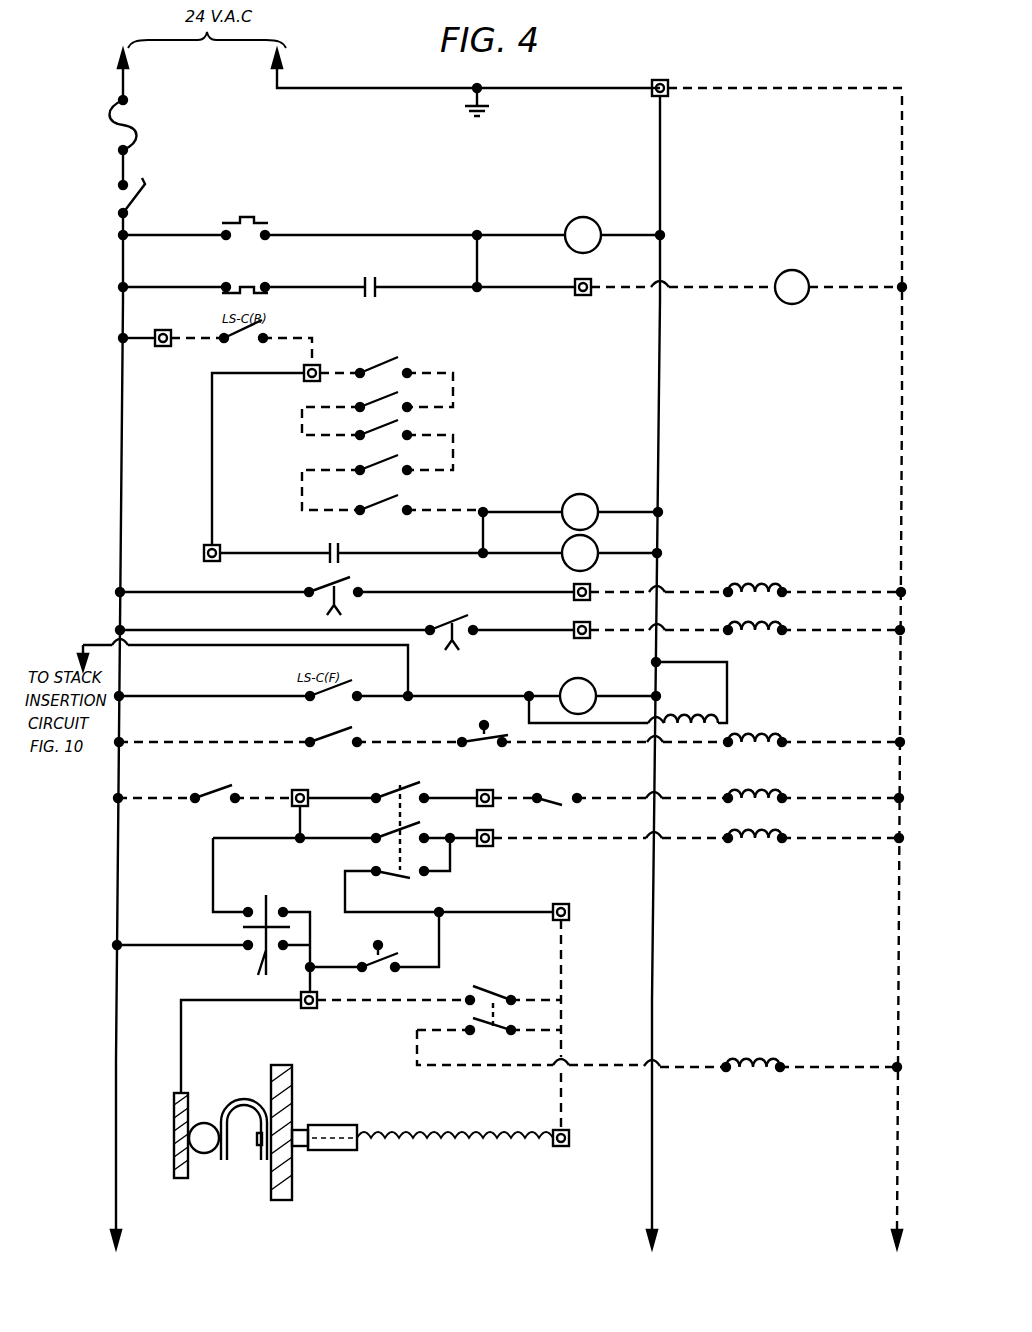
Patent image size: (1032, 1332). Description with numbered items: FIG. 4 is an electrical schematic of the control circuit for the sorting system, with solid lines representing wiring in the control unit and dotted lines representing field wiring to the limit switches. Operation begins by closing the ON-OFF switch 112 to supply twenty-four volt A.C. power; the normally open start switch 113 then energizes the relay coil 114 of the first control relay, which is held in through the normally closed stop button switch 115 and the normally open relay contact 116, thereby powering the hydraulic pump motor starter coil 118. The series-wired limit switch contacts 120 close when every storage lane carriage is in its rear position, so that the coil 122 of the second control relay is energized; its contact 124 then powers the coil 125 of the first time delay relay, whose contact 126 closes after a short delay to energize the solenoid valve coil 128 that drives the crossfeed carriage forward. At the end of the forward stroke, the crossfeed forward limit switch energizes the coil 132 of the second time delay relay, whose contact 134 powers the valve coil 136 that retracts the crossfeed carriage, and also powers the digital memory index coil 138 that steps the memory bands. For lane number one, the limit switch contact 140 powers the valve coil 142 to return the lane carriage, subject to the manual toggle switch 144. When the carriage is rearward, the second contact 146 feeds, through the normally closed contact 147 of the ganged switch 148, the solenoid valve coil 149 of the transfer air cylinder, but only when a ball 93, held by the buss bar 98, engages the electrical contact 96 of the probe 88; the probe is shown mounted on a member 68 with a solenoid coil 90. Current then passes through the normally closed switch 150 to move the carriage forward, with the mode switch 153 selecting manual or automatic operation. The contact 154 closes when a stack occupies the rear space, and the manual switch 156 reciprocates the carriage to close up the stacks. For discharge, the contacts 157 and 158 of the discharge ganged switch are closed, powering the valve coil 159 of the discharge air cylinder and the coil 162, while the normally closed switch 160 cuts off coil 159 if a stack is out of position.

The ON-OFF switch 112 is at (143, 198).
The push button start switch 113 is at (268, 228).
The coil of control relay 1-CR 114 is at (587, 226).
The stop button switch 115 is at (239, 285).
The contact of control relay 1-CR 116 is at (376, 282).
The hydraulic pump motor starter coil 118 is at (796, 278).
The first contact of limit switch 120 is at (435, 504).
The coil of control relay 2-CR 122 is at (586, 502).
The contact of control relay 2-CR 124 is at (341, 554).
The coil of time delay relay TDR-1 125 is at (596, 548).
The contact of time delay relay TDR-1 126 is at (362, 587).
The solenoid valve coil 128 is at (772, 592).
The coil of time delay relay TDR-2 132 is at (578, 688).
The relay contact of TDR-2 134 is at (470, 620).
The hydraulic cylinder valve coil 136 is at (730, 628).
The digital memory index coil 138 is at (728, 722).
The contact of limit switch LS-1A 140 is at (367, 736).
The hydraulic cylinder valve coil 142 is at (772, 744).
The manually operative toggle switch 144 is at (488, 744).
The second contact of limit switch LS-1A 146 is at (215, 798).
The contact of ganged switch 147 is at (507, 1033).
The ganged switch 148 is at (437, 1012).
The solenoid valve coil of air cylinder AC-T1 149 is at (767, 1072).
The normally closed switch 150 is at (404, 874).
The switch 153 is at (260, 977).
The contact of ganged switch 154 is at (501, 998).
The normally open switch 156 is at (390, 950).
The contact of ganged switch DTS-1 157 is at (424, 794).
The contact of ganged switch DTS-1 158 is at (416, 834).
The valve coil of air cylinder AC-D1 159 is at (777, 798).
The normally closed switch 160 is at (566, 805).
The hydraulic control coil HC-1(F) 162 is at (762, 838).
The frame member 68 is at (285, 1083).
The probe 88 is at (326, 1152).
The solenoid coil 90 is at (462, 1140).
The ball 93 is at (205, 1122).
The electrical contact 96 is at (244, 1113).
The buss bar 98 is at (188, 1178).